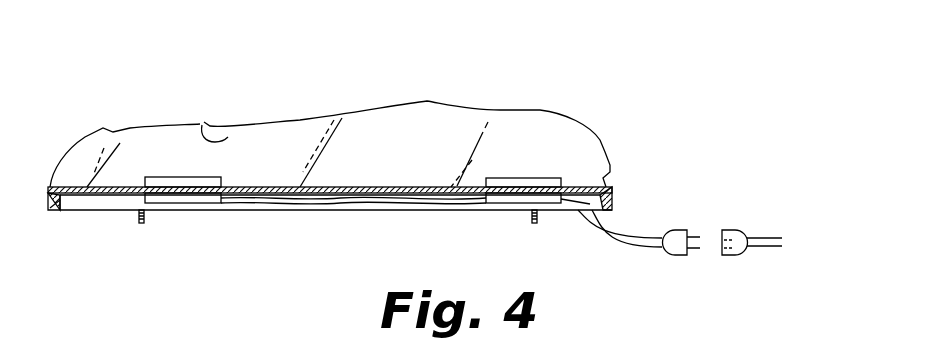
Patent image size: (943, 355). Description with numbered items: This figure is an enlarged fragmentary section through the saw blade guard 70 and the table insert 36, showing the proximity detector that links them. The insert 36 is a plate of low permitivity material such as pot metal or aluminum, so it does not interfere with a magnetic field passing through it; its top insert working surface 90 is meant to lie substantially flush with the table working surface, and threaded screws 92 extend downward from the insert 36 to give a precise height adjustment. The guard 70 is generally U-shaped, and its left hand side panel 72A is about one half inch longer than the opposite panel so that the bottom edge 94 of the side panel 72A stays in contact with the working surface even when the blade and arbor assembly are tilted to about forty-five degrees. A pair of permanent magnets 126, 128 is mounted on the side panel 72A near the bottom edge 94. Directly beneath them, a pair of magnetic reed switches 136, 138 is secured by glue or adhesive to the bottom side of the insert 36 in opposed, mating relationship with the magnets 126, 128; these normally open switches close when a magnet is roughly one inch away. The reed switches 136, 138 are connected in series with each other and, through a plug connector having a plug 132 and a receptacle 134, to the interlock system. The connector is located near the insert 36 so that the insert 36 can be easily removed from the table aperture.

The insert 36 is at (48, 210).
The saw blade guard 70 is at (402, 110).
The left hand side panel 72A is at (202, 125).
The top insert working surface 90 is at (75, 186).
The threaded screws 92 is at (137, 223).
The bottom edge 94 is at (588, 187).
The permanent magnet 126 is at (167, 177).
The permanent magnet 128 is at (516, 178).
The plug 132 is at (672, 250).
The receptacle 134 is at (733, 255).
The magnetic reed switch 136 is at (160, 203).
The magnetic reed switch 138 is at (525, 203).